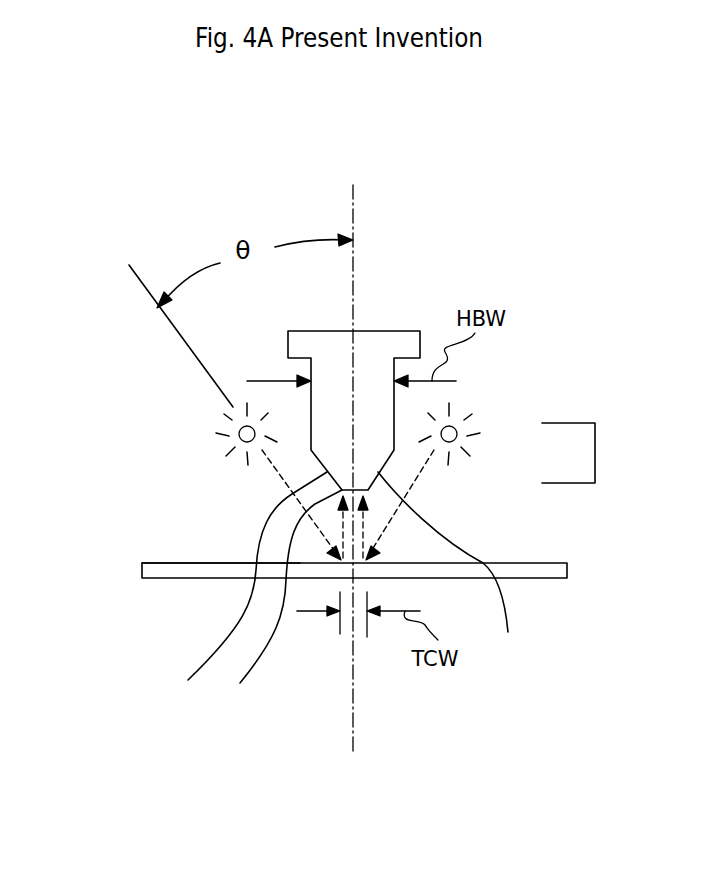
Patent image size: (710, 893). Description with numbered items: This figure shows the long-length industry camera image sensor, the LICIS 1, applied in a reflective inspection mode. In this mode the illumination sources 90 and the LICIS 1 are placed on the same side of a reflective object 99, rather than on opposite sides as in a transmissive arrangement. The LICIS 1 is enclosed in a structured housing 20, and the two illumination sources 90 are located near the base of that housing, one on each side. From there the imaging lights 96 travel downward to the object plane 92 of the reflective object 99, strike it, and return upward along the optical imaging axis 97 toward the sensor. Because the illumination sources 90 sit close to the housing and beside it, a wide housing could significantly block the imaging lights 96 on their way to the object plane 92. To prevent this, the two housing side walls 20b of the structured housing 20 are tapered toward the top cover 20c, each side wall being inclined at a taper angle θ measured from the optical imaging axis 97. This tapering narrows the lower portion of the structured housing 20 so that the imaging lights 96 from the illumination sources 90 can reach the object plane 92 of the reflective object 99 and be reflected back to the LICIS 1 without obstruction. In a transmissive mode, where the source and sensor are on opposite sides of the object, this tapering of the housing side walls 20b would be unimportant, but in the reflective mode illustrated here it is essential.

The long-length industry camera image sensor (LICIS) 1 is at (346, 410).
The structured housing 20 is at (595, 445).
The housing side walls 20b is at (340, 591).
The top cover 20c is at (280, 605).
The illumination sources 90 is at (215, 433).
The object plane 92 is at (566, 562).
The imaging lights 96 is at (285, 496).
The optical imaging axis 97 is at (354, 712).
The reflective object 99 is at (163, 570).